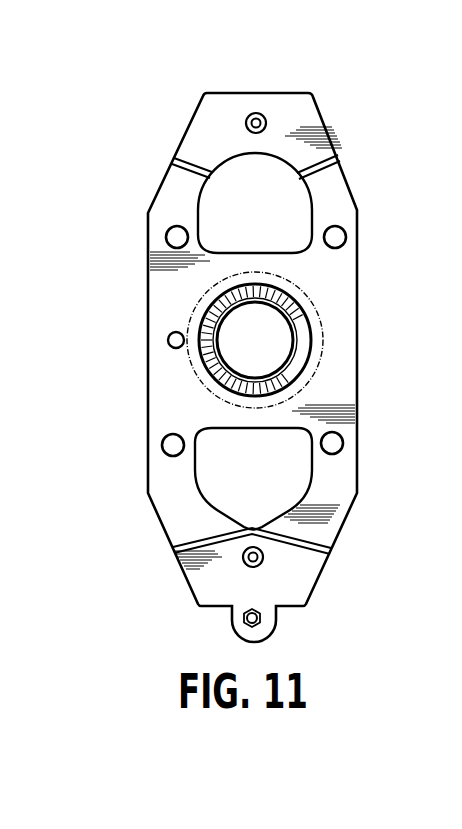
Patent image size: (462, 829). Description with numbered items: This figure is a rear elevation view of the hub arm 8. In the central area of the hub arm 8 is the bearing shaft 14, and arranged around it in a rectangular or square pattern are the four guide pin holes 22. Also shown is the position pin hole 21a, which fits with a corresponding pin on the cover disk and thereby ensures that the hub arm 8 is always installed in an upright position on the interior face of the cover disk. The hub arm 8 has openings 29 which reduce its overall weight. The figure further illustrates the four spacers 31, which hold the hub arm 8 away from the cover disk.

The hub arm 8 is at (183, 518).
The bearing shaft 14 is at (215, 372).
The position pin hole 21a is at (168, 350).
The guide pin holes 22 is at (170, 229).
The openings 29 is at (287, 478).
The spacers 31 is at (198, 164).